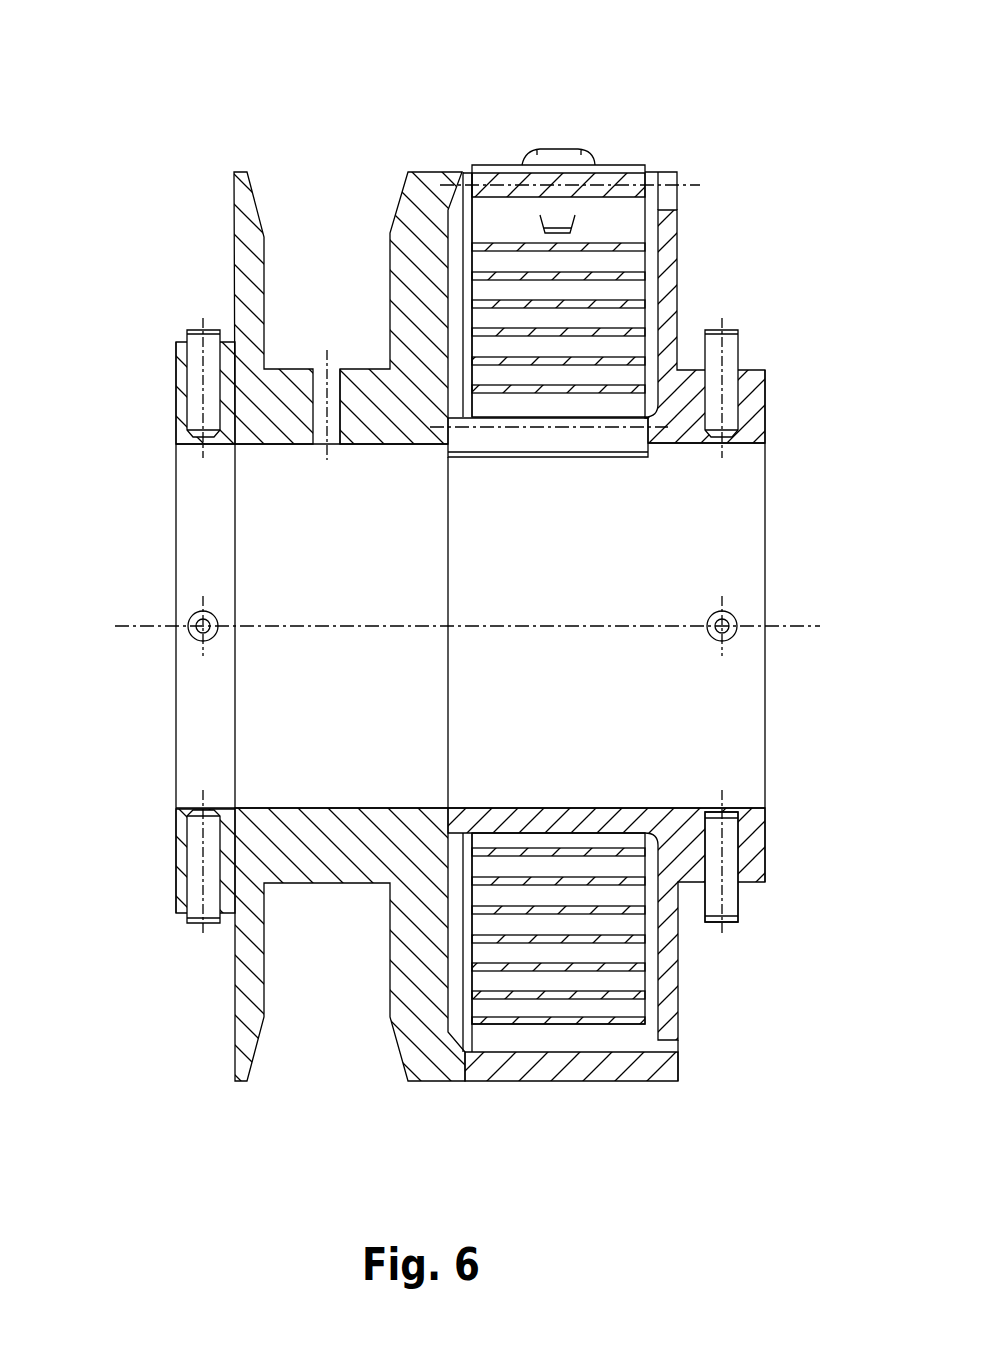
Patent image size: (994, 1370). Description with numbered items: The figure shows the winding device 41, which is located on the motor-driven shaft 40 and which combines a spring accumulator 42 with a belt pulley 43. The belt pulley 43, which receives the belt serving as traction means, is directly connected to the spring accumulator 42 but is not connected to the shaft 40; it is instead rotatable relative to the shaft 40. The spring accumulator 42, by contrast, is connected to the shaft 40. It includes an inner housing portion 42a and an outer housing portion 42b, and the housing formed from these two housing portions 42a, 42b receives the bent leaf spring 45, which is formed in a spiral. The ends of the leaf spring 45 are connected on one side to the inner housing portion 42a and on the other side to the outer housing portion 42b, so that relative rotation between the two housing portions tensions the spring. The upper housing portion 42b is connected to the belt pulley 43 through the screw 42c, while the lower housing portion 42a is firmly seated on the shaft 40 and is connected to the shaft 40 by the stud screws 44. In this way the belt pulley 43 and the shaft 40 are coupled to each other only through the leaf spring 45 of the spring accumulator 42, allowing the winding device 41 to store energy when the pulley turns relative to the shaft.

The shaft 40 is at (768, 571).
The winding device 41 is at (173, 1023).
The spring accumulator 42 is at (555, 150).
The inner housing portion 42a is at (768, 388).
The outer housing portion 42b is at (488, 167).
The screw 42c is at (428, 178).
The belt pulley 43 is at (197, 235).
The stud screws 44 is at (728, 891).
The bent leaf spring 45 is at (633, 242).